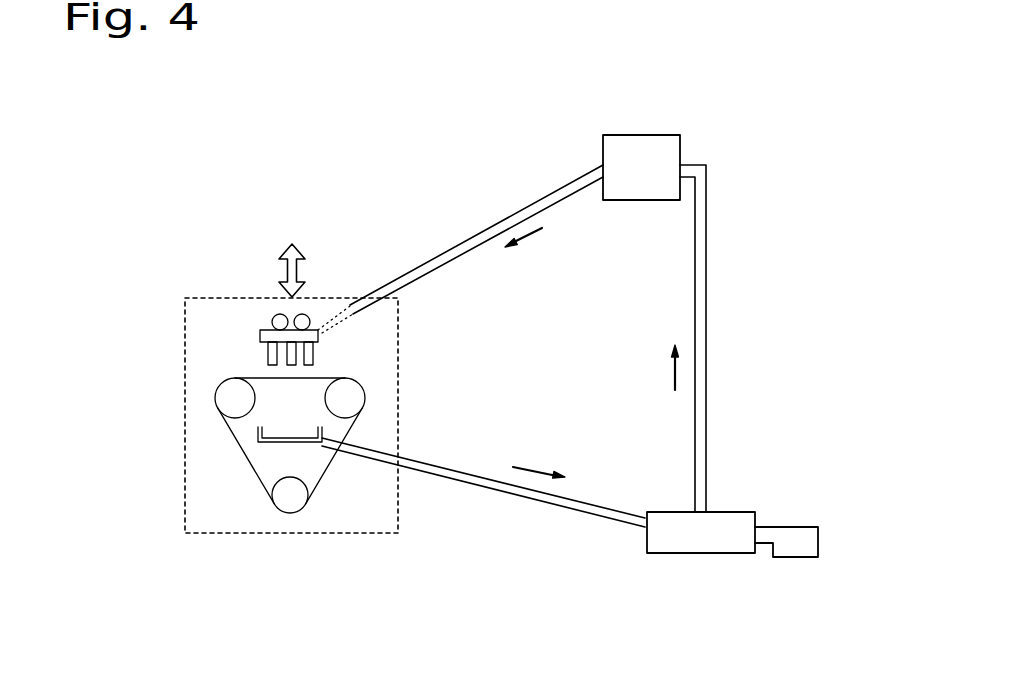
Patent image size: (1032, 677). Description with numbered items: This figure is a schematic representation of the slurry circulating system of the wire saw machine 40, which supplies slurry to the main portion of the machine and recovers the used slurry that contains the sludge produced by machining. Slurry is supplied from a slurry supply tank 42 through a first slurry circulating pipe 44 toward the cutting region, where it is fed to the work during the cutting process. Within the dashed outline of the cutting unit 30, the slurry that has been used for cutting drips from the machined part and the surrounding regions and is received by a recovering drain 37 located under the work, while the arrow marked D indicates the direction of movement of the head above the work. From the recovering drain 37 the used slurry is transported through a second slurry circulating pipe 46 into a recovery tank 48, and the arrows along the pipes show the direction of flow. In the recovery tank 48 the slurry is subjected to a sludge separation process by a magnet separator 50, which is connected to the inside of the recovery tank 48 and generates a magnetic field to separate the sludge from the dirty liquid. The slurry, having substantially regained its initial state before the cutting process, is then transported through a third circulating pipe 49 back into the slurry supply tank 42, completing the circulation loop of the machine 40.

The cleaning unit 30 is at (298, 533).
The recovering drain 37 is at (277, 448).
The wire saw machine 40 is at (786, 295).
The slurry supply tank 42 is at (647, 135).
The first slurry circulating pipe 44 is at (505, 222).
The second slurry circulating pipe 46 is at (542, 505).
The recovery tank 48 is at (708, 553).
The third circulating pipe 49 is at (705, 388).
The magnet separator 50 is at (803, 557).
The direction of movement D is at (298, 269).